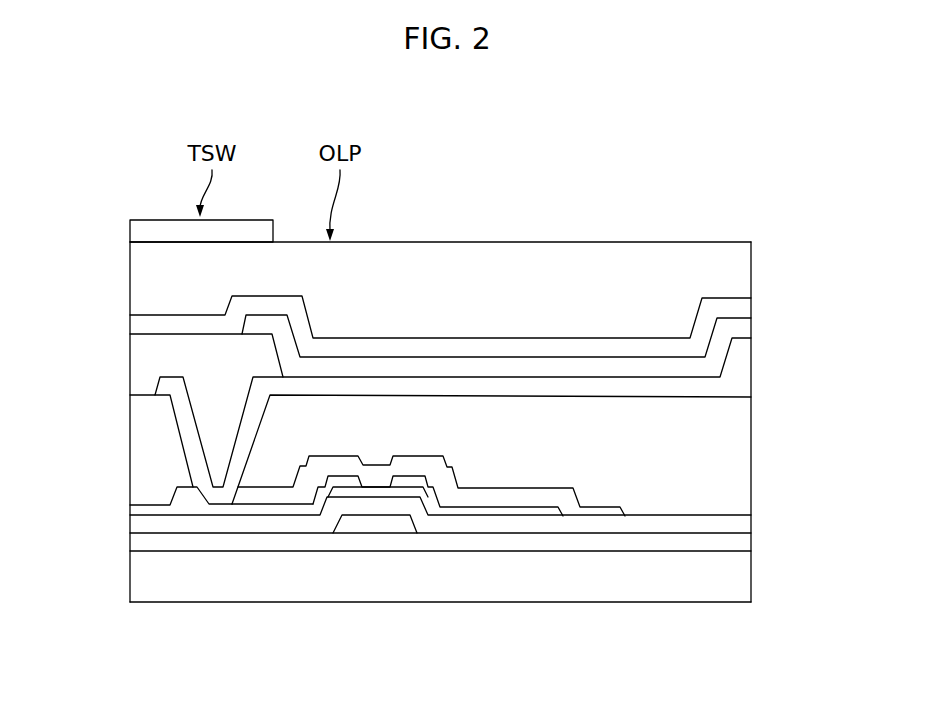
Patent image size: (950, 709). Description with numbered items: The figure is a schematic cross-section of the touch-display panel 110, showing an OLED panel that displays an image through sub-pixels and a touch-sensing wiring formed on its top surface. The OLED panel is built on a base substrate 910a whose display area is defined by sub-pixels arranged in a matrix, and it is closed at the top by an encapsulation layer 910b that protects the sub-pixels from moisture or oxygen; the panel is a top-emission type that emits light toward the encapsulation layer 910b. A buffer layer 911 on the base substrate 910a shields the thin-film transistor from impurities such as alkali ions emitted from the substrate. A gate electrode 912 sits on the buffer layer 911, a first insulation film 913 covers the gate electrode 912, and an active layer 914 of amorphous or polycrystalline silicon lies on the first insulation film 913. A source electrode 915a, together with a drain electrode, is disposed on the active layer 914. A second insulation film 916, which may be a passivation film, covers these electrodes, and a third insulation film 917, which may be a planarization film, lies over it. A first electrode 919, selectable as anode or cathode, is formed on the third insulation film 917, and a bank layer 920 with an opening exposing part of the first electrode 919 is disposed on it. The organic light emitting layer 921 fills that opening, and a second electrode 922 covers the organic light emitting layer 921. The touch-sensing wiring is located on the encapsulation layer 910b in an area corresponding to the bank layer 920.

The touch-display panel 110 is at (362, 140).
The encapsulation layer 910b is at (751, 270).
The second electrode 922 is at (751, 302).
The organic light emitting layer 921 is at (751, 333).
The bank layer 920 is at (133, 358).
The first electrode 919 is at (751, 383).
The third insulation film 917 is at (751, 463).
The second insulation film 916 is at (133, 508).
The source electrode 915a is at (246, 512).
The active layer 914 is at (398, 493).
The first insulation film 913 is at (751, 522).
The gate electrode 912 is at (372, 528).
The buffer layer 911 is at (751, 547).
The base substrate 910a is at (751, 588).